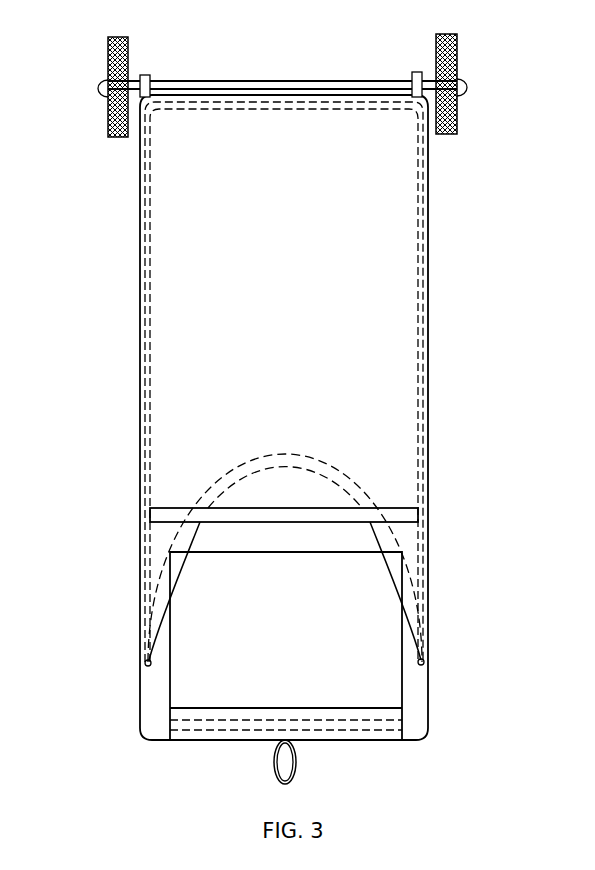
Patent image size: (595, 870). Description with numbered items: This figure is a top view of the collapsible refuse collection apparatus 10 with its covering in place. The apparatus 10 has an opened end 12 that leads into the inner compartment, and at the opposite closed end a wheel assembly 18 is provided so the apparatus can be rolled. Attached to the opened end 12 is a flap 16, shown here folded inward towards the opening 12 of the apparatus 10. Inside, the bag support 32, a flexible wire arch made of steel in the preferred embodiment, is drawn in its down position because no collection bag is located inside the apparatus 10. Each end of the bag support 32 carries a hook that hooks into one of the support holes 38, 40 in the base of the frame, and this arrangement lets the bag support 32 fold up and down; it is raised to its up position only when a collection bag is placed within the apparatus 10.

The apparatus 10 is at (514, 240).
The opened end 12 is at (200, 540).
The flap 16 is at (296, 633).
The wheel assembly 18 is at (95, 98).
The bag support 32 is at (382, 550).
The support hole 38 is at (425, 662).
The support hole 40 is at (145, 663).